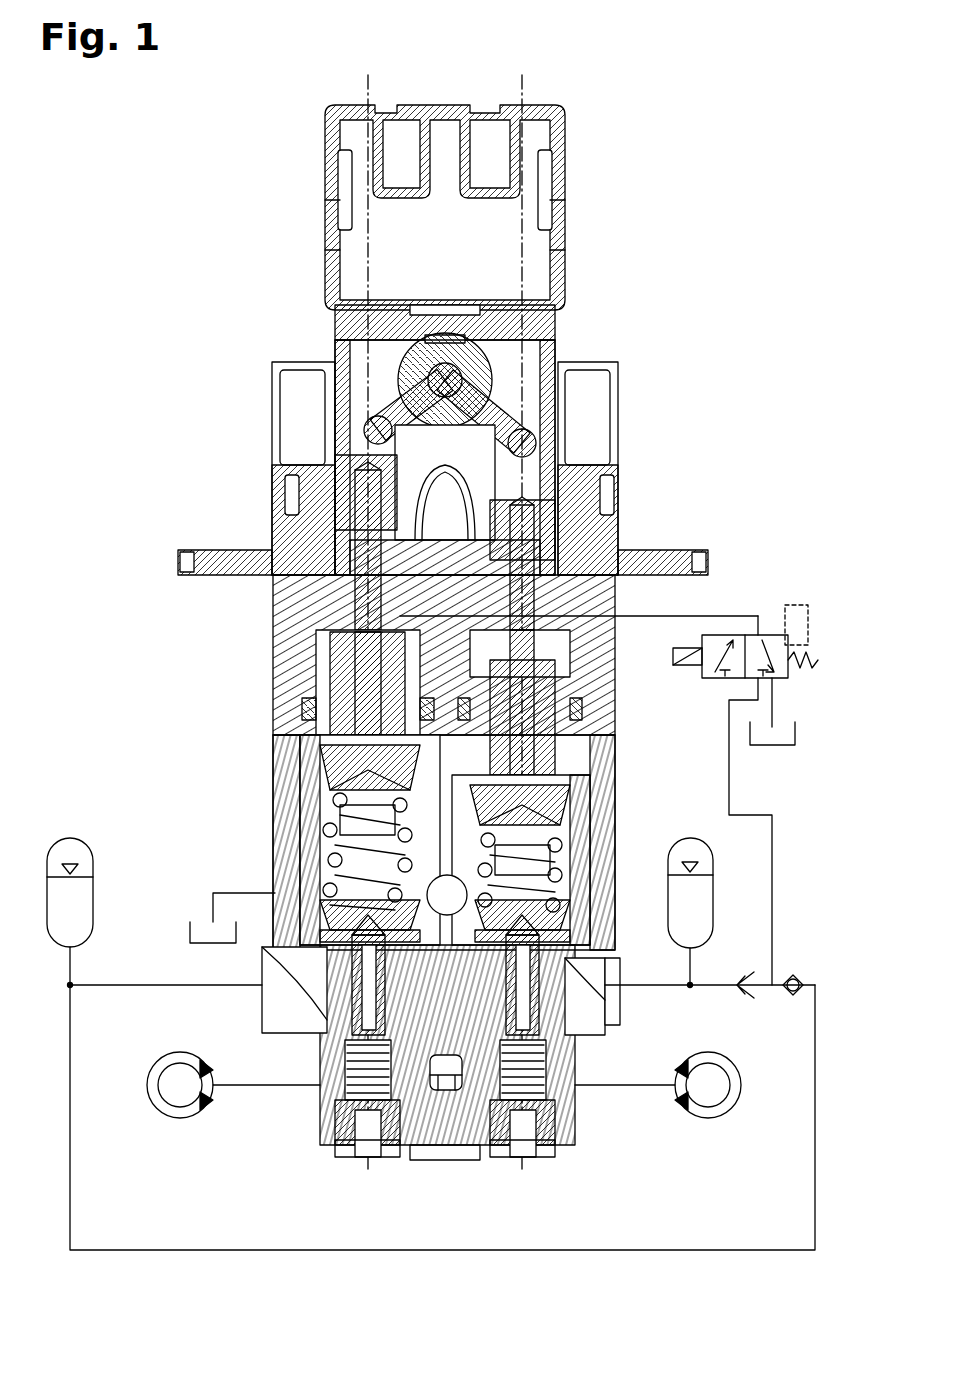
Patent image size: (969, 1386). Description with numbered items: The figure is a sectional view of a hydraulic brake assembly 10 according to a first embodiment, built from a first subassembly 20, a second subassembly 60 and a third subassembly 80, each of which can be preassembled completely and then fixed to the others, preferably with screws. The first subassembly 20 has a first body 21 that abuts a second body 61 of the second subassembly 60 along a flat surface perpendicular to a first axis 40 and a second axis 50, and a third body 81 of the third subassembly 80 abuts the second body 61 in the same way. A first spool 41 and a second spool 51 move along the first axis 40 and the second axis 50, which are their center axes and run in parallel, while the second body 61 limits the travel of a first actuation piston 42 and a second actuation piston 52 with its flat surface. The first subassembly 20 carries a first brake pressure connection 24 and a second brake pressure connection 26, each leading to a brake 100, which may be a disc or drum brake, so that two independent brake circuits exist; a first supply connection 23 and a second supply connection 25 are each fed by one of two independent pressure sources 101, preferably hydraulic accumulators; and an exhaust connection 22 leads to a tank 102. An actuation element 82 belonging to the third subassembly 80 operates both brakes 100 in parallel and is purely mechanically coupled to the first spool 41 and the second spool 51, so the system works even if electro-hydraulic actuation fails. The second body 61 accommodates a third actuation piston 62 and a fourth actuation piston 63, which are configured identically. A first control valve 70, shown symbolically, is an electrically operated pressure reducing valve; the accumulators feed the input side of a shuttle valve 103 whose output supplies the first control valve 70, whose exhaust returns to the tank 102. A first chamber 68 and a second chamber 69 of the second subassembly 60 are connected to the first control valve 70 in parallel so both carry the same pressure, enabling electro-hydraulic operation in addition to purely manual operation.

The hydraulic brake assembly 10 is at (643, 85).
The first subassembly 20 is at (422, 840).
The first body 21 is at (422, 840).
The exhaust connection 22 is at (325, 882).
The first supply connection 23 is at (330, 1002).
The first brake pressure connection 24 is at (395, 1140).
The second supply connection 25 is at (580, 1015).
The second brake pressure connection 26 is at (485, 1140).
The first axis 40 is at (368, 76).
The first spool 41 is at (350, 1025).
The first actuation piston 42 is at (300, 752).
The second axis 50 is at (522, 76).
The second spool 51 is at (590, 948).
The second actuation piston 52 is at (605, 790).
The second subassembly 60 is at (456, 762).
The second body 61 is at (456, 762).
The third actuation piston 62 is at (340, 690).
The fourth actuation piston 63 is at (600, 730).
The first chamber 68 is at (345, 632).
The second chamber 69 is at (595, 680).
The first control valve 70 is at (770, 630).
The third subassembly 80 is at (451, 481).
The third body 81 is at (600, 480).
The actuation element 82 is at (565, 200).
The brake 100 is at (178, 1120).
The pressure source 101 is at (40, 845).
The tank 102 is at (190, 947).
The shuttle valve 103 is at (765, 990).